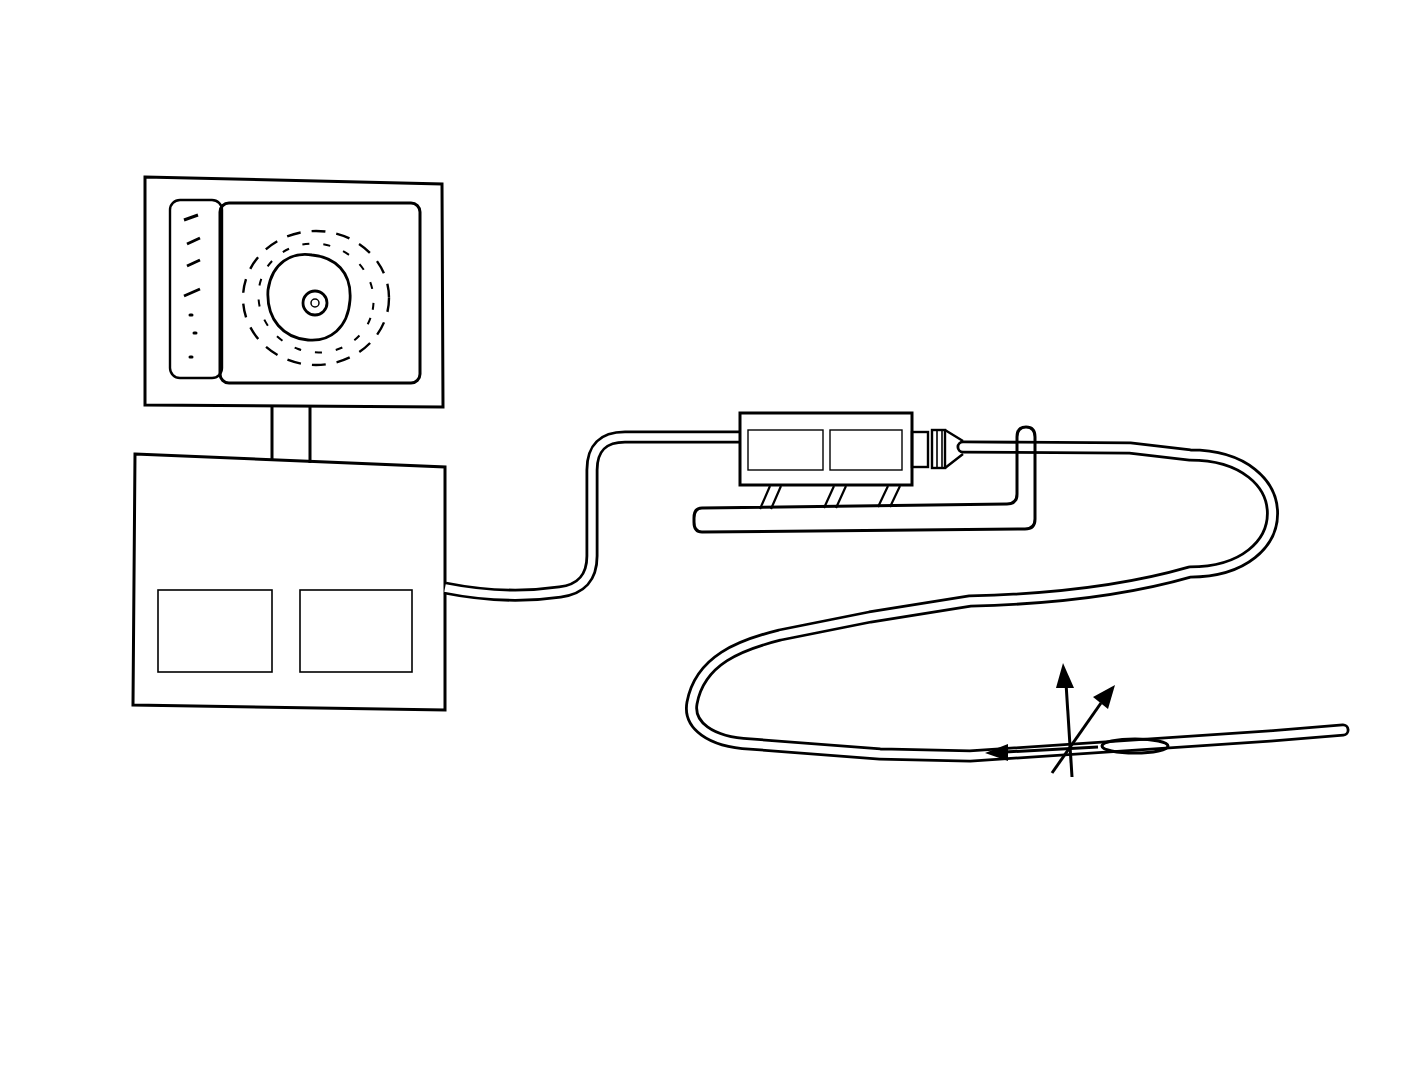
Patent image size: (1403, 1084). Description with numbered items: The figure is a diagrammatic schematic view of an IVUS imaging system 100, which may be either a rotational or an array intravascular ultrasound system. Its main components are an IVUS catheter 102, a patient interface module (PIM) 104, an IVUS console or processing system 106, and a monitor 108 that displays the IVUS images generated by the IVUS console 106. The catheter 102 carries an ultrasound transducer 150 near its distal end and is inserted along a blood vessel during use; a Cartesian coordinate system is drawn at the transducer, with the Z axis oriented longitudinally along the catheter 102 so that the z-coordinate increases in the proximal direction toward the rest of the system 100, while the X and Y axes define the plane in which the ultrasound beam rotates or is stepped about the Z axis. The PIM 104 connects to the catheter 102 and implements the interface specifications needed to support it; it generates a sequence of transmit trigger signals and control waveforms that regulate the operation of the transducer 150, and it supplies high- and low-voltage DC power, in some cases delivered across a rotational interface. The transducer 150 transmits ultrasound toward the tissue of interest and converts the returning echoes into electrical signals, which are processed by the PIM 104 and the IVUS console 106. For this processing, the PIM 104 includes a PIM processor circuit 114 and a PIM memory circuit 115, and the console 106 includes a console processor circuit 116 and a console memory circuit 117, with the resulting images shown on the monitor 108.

The IVUS imaging system 100 is at (907, 157).
The IVUS catheter 102 is at (1027, 607).
The patient interface module (PIM) 104 is at (833, 415).
The IVUS console 106 is at (290, 713).
The monitor 108 is at (437, 282).
The PIM processor circuit 114 is at (785, 450).
The PIM memory circuit 115 is at (866, 450).
The console processor circuit 116 is at (215, 631).
The console memory circuit 117 is at (356, 631).
The ultrasound transducer 150 is at (1135, 758).